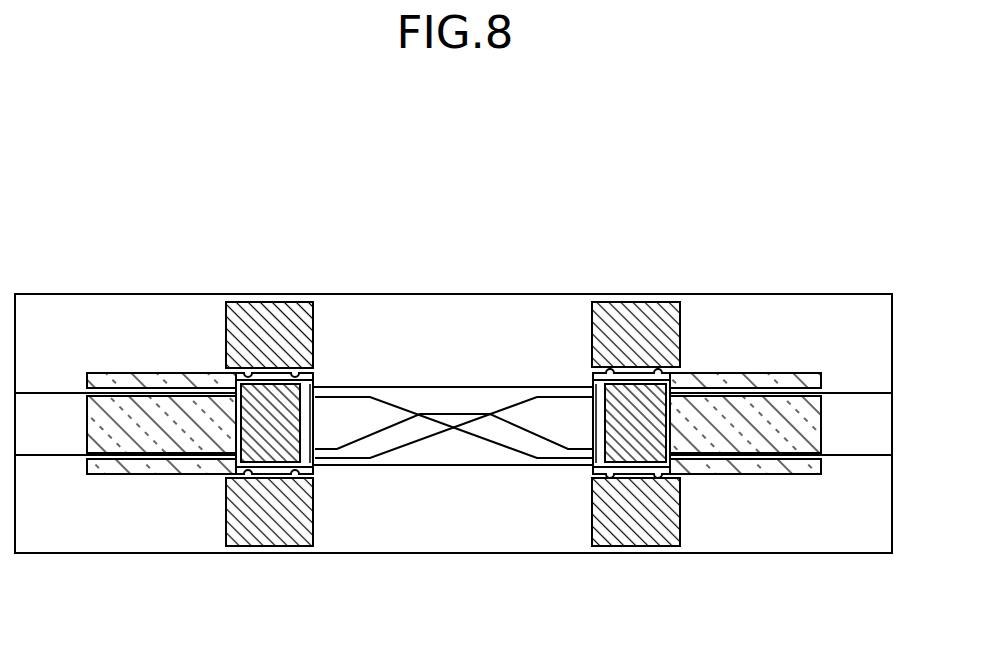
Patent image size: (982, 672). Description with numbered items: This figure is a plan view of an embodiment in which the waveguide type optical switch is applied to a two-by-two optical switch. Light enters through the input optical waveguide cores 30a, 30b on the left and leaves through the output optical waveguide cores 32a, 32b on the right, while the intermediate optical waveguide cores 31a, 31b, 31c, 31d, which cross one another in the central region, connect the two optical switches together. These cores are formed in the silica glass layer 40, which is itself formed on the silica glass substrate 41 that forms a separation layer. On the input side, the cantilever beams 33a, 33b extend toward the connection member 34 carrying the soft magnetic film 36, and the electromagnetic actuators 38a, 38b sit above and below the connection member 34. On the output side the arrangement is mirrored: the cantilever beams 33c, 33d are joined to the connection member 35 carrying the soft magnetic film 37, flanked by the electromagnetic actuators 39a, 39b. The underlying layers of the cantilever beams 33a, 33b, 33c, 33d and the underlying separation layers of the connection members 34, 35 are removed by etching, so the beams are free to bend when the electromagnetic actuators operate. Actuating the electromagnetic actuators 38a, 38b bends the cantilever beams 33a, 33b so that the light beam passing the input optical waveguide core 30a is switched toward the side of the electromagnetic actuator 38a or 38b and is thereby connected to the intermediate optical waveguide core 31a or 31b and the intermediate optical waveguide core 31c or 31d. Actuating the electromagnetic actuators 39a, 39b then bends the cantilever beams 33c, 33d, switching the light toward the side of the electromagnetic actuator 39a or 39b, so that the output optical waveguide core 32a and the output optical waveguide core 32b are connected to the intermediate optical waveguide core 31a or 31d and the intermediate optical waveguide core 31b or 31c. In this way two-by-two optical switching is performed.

The input optical waveguide core 30a is at (60, 393).
The input optical waveguide core 30b is at (52, 455).
The intermediate optical waveguide core 31a is at (368, 387).
The intermediate optical waveguide core 31b is at (398, 408).
The intermediate optical waveguide core 31c is at (458, 414).
The intermediate optical waveguide core 31d is at (513, 402).
The output optical waveguide core 32a is at (864, 393).
The output optical waveguide core 32b is at (853, 455).
The cantilever beam 33a is at (113, 376).
The cantilever beam 33b is at (195, 463).
The cantilever beam 33c is at (752, 375).
The cantilever beam 33d is at (705, 460).
The connection member 34 is at (309, 382).
The connection member 35 is at (602, 386).
The soft magnetic film 36 is at (278, 400).
The soft magnetic film 37 is at (645, 398).
The electromagnetic actuator 38a is at (249, 308).
The electromagnetic actuator 38b is at (277, 522).
The electromagnetic actuator 39a is at (645, 332).
The electromagnetic actuator 39b is at (622, 521).
The silica glass layer 40 is at (421, 522).
The silica glass substrate 41 is at (115, 433).